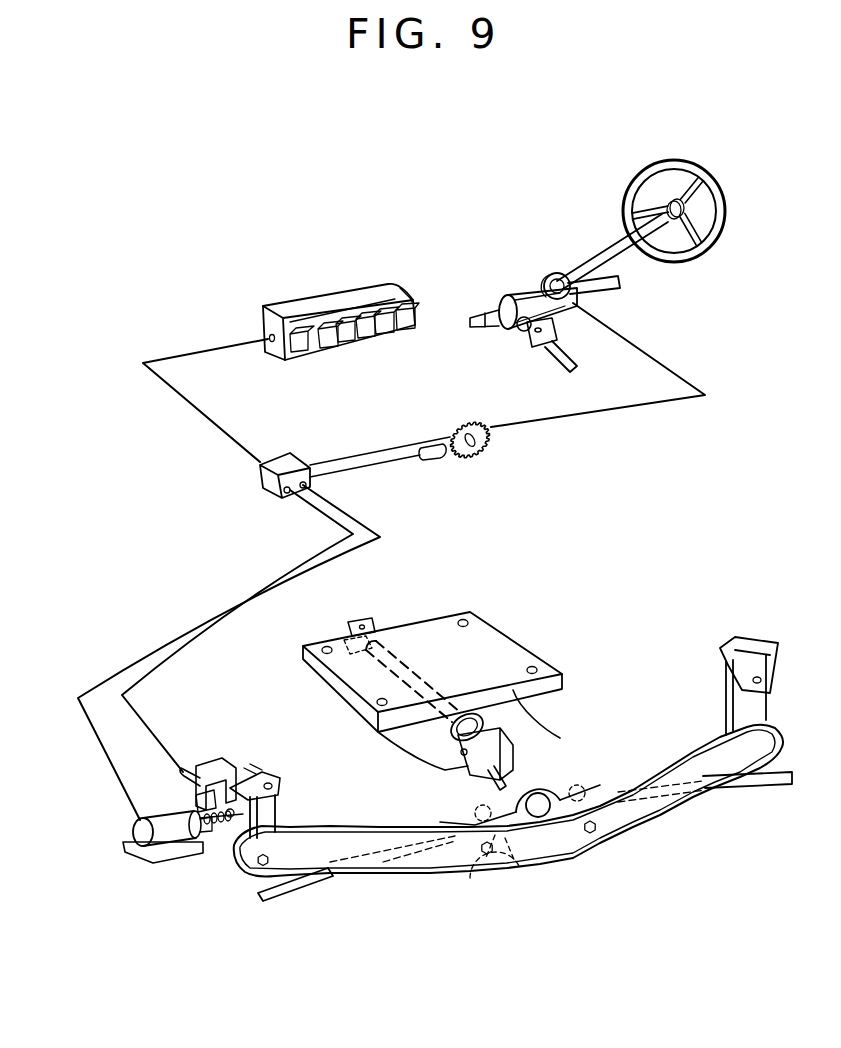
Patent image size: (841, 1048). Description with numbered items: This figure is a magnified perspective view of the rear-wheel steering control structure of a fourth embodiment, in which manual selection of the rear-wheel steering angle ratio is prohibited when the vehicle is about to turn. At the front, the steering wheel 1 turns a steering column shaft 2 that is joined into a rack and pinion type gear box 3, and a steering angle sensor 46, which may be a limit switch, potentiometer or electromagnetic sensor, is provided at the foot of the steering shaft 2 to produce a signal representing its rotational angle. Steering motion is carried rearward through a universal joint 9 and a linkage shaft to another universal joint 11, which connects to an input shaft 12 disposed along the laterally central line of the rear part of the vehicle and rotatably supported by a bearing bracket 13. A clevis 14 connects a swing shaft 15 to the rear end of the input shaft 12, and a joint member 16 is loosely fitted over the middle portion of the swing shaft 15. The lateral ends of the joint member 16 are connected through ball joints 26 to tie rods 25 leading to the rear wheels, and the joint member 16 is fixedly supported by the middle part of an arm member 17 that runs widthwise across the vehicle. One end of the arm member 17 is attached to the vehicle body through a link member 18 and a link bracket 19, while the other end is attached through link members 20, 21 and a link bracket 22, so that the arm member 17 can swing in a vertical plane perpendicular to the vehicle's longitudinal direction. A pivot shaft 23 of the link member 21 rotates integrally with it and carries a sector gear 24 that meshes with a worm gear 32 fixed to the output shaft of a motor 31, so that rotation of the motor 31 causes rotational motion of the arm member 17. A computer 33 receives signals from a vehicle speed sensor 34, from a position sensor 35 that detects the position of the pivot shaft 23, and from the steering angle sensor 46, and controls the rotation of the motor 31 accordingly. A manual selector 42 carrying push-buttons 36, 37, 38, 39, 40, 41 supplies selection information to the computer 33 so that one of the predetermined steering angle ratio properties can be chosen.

The steering wheel 1 is at (727, 212).
The steering column shaft 2 is at (624, 254).
The rack and pinion type gear box 3 is at (527, 289).
The universal joint 9 is at (535, 362).
The universal joint 11 is at (374, 622).
The input shaft 12 is at (412, 665).
The bearing bracket 13 is at (530, 650).
The clevis 14 is at (505, 753).
The swing shaft 15 is at (486, 780).
The joint member 16 is at (547, 774).
The arm member 17 is at (654, 838).
The link member 18 is at (768, 710).
The link bracket 19 is at (778, 655).
The link member 20 is at (280, 798).
The link member 21 is at (250, 768).
The link bracket 22 is at (214, 768).
The pivot shaft 23 is at (238, 772).
The sector gear 24 is at (194, 804).
The tie rods 25 is at (340, 881).
The ball joints 26 is at (596, 782).
The motor 31 is at (178, 860).
The worm gear 32 is at (218, 835).
The computer 33 is at (288, 450).
The vehicle speed sensor 34 is at (435, 461).
The position sensor 35 is at (188, 765).
The push-button 36 is at (290, 306).
The push-button 37 is at (330, 356).
The push-button 38 is at (341, 318).
The push-button 39 is at (365, 340).
The push-button 40 is at (383, 307).
The push-button 41 is at (415, 328).
The manual selector 42 is at (413, 301).
The steering angle sensor 46 is at (560, 273).